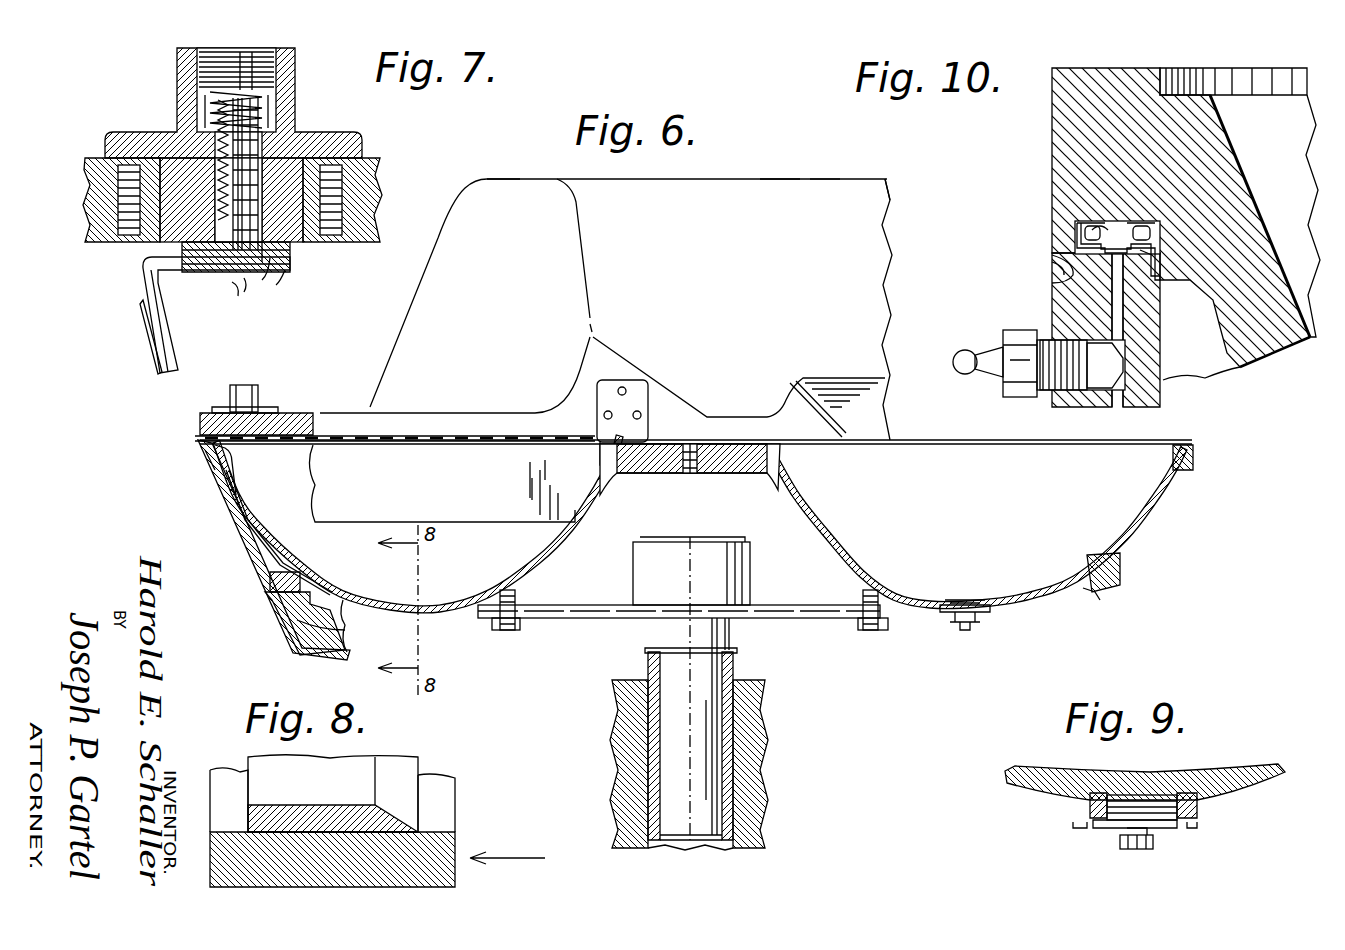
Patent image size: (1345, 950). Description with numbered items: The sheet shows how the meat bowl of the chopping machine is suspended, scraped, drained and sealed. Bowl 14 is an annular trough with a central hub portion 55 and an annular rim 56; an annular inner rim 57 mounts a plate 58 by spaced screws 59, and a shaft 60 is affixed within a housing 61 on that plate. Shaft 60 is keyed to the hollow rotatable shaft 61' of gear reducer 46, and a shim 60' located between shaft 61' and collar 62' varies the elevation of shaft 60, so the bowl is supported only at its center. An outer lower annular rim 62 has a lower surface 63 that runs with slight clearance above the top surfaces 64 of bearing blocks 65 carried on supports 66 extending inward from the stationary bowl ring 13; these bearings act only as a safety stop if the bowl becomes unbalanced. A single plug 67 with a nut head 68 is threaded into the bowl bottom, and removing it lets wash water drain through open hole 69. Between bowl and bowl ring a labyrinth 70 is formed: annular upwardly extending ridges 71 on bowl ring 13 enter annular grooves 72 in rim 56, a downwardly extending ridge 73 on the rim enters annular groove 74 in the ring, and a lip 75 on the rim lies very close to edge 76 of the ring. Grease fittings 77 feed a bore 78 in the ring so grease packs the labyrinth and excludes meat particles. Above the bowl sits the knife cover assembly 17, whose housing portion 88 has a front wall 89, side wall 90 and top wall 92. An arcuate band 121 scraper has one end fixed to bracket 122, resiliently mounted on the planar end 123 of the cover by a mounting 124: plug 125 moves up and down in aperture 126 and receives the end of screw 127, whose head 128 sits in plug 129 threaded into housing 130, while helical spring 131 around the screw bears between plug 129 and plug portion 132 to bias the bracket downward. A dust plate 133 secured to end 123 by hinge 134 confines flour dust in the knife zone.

In FIG. 6, the bowl ring 13 is at (230, 532).
In FIG. 10, the bowl ring 13 is at (1062, 312).
In FIG. 6, the bowl 14 is at (1160, 520).
In FIG. 10, the bowl 14 is at (1063, 148).
In FIG. 8, the bowl 14 is at (405, 880).
In FIG. 9, the bowl 14 is at (1012, 782).
In FIG. 6, the knife cover assembly 17 is at (500, 186).
In FIG. 6, the gear reducer 46 is at (750, 736).
In FIG. 6, the central hub portion 55 is at (745, 466).
In FIG. 6, the annular lip or rim 56 is at (1196, 456).
In FIG. 10, the annular lip or rim 56 is at (1057, 175).
In FIG. 6, the annular inner rim 57 is at (516, 598).
In FIG. 6, the plate 58 is at (790, 618).
In FIG. 6, the screws 59 is at (503, 631).
In FIG. 6, the shaft 60 is at (649, 746).
In FIG. 6, the shim 60' is at (658, 639).
In FIG. 6, the housing 61 is at (712, 688).
In FIG. 6, the hollow rotatable shaft 61' is at (637, 726).
In FIG. 6, the outer lower annular rim 62 is at (1135, 572).
In FIG. 6, the collar 62' is at (752, 641).
In FIG. 6, the lower surface 63 is at (1097, 592).
In FIG. 6, the top surfaces 64 is at (270, 574).
In FIG. 6, the bearing blocks 65 is at (275, 612).
In FIG. 6, the supports 66 is at (325, 626).
In FIG. 6, the plug 67 is at (970, 604).
In FIG. 9, the plug 67 is at (1142, 796).
In FIG. 9, the nut head 68 is at (1135, 849).
In FIG. 9, the open hole 69 is at (1112, 796).
In FIG. 6, the labyrinth 70 is at (207, 458).
In FIG. 10, the labyrinth 70 is at (1087, 245).
In FIG. 10, the annular upwardly extending ridges 71 is at (1085, 226).
In FIG. 10, the annular grooves 72 is at (1092, 235).
In FIG. 10, the annular downwardly extending ridge 73 is at (1150, 255).
In FIG. 10, the annular groove 74 is at (1080, 240).
In FIG. 10, the lip 75 is at (1066, 252).
In FIG. 10, the edge 76 is at (1056, 278).
In FIG. 10, the grease fittings 77 is at (988, 346).
In FIG. 10, the bore 78 is at (1117, 313).
In FIG. 6, the housing portion 88 is at (872, 190).
In FIG. 6, the front wall 89 is at (818, 198).
In FIG. 6, the side wall 90 is at (447, 272).
In FIG. 6, the top wall 92 is at (786, 186).
In FIG. 7, the arcuate band 121 is at (150, 342).
In FIG. 6, the arcuate band 121 is at (322, 576).
In FIG. 8, the arcuate band 121 is at (312, 805).
In FIG. 7, the bracket 122 is at (172, 342).
In FIG. 6, the bracket 122 is at (240, 462).
In FIG. 7, the planar end 123 is at (378, 210).
In FIG. 6, the planar end 123 is at (300, 412).
In FIG. 7, the mounting 124 is at (296, 114).
In FIG. 7, the plug 125 is at (190, 251).
In FIG. 7, the aperture 126 is at (268, 280).
In FIG. 7, the screw 127 is at (240, 290).
In FIG. 7, the head 128 is at (178, 42).
In FIG. 7, the plug 129 is at (196, 76).
In FIG. 7, the housing 130 is at (180, 110).
In FIG. 6, the housing 130 is at (230, 396).
In FIG. 7, the helical spring 131 is at (262, 102).
In FIG. 7, the plug portion 132 is at (366, 176).
In FIG. 6, the dust plate 133 is at (488, 518).
In FIG. 6, the hinge 134 is at (486, 440).